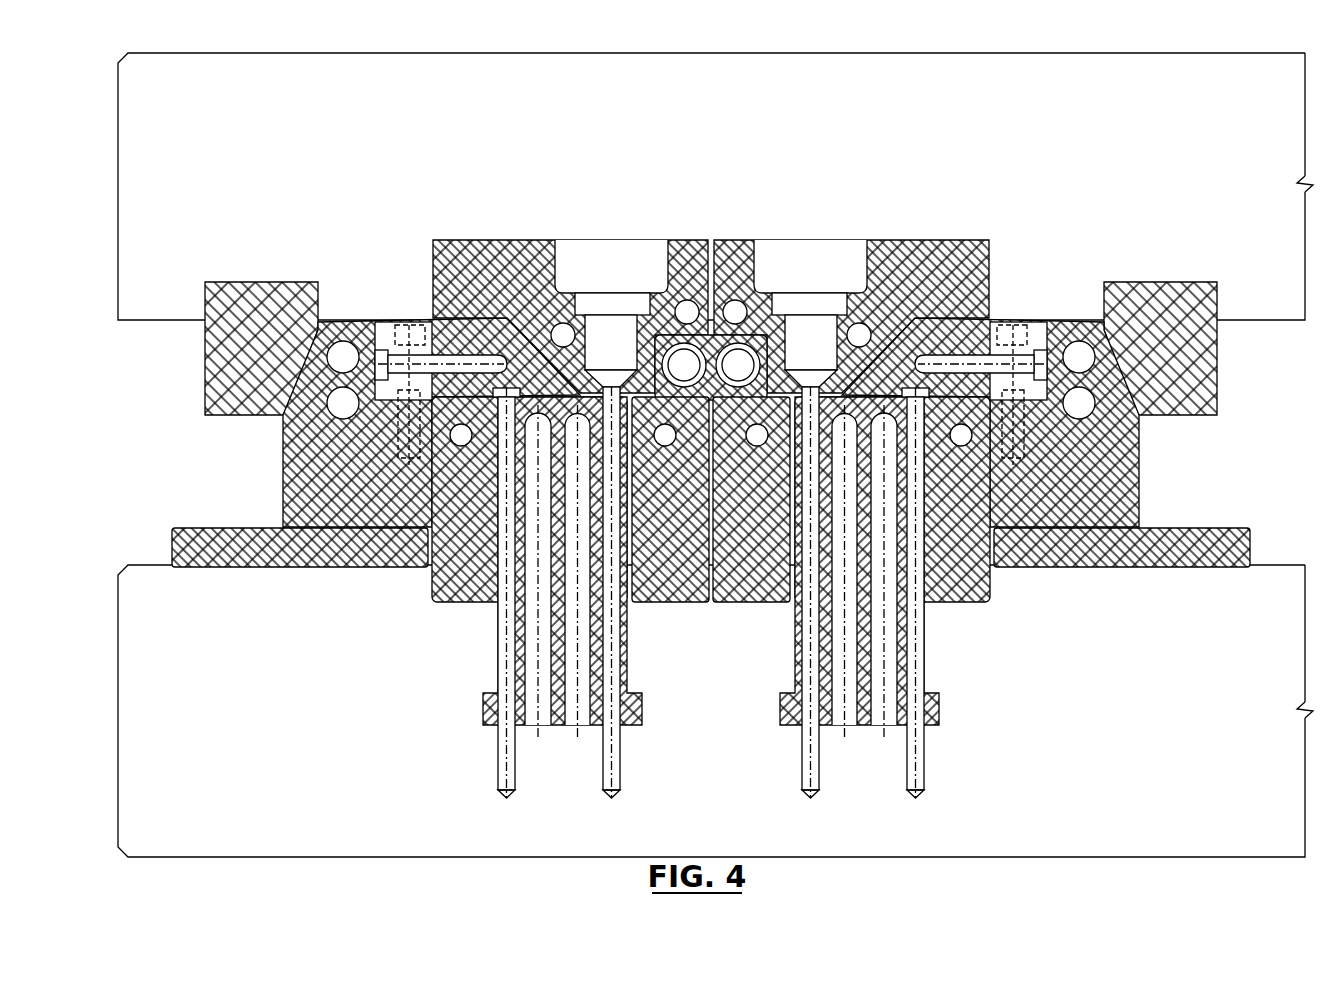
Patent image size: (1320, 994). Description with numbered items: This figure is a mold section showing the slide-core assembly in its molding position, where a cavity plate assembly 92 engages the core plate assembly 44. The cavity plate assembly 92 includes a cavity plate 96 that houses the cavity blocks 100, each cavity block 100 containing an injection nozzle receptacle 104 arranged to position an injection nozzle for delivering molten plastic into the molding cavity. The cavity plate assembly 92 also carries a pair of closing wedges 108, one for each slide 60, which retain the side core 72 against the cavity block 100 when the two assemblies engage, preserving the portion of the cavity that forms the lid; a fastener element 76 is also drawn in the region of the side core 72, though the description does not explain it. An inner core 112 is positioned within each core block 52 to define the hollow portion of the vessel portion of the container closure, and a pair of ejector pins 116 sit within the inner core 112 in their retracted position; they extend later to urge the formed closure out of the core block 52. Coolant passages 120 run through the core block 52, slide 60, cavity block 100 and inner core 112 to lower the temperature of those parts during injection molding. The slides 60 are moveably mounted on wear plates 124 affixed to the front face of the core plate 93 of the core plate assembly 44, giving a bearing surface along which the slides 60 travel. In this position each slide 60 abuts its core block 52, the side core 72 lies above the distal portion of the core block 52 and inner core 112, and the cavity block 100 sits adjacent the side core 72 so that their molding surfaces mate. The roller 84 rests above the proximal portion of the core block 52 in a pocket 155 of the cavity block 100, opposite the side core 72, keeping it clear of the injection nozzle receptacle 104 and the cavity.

The core plate assembly 44 is at (116, 870).
The core block 52 is at (432, 598).
The slide 60 is at (283, 483).
The side core 72 is at (408, 322).
The fastener 76 is at (400, 432).
The roller 84 is at (684, 355).
The cavity plate assembly 92 is at (105, 126).
The core plate 93 is at (222, 822).
The cavity plate 96 is at (1168, 117).
The cavity block 100 is at (470, 238).
The injection nozzle receptacle 104 is at (594, 274).
The closing wedge 108 is at (205, 362).
The inner core 112 is at (642, 705).
The ejector pin 116 is at (500, 742).
The coolant passage 120 is at (555, 345).
The wear plate 124 is at (278, 563).
The pocket 155 is at (718, 334).